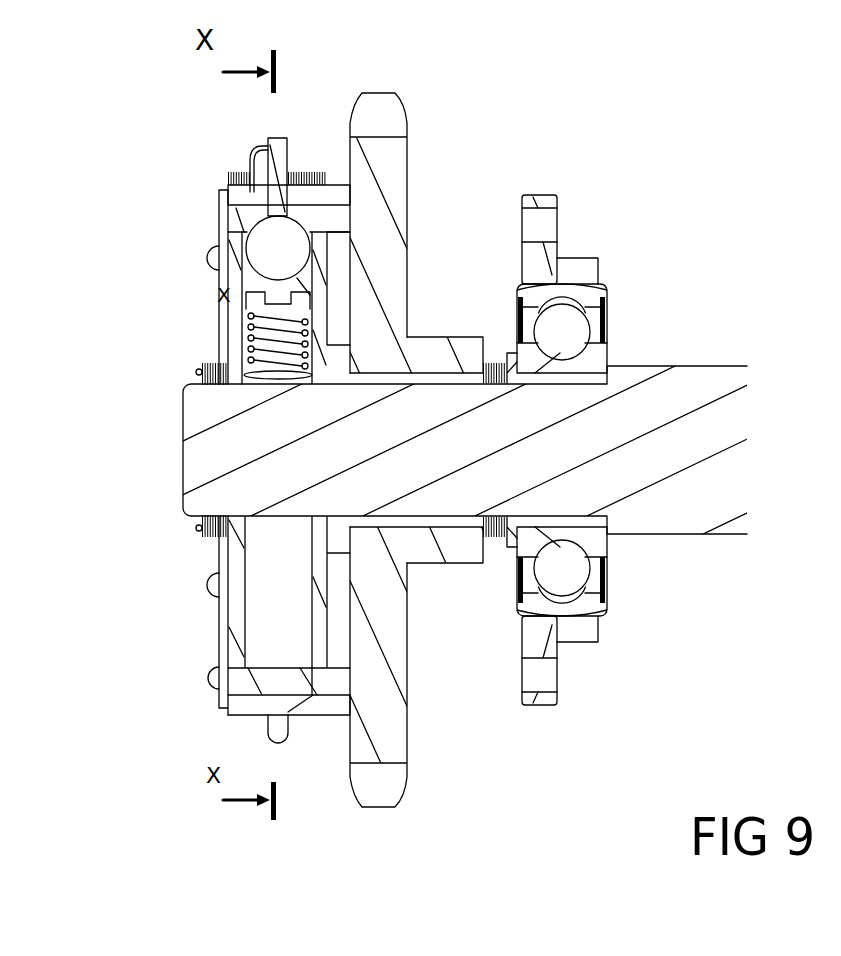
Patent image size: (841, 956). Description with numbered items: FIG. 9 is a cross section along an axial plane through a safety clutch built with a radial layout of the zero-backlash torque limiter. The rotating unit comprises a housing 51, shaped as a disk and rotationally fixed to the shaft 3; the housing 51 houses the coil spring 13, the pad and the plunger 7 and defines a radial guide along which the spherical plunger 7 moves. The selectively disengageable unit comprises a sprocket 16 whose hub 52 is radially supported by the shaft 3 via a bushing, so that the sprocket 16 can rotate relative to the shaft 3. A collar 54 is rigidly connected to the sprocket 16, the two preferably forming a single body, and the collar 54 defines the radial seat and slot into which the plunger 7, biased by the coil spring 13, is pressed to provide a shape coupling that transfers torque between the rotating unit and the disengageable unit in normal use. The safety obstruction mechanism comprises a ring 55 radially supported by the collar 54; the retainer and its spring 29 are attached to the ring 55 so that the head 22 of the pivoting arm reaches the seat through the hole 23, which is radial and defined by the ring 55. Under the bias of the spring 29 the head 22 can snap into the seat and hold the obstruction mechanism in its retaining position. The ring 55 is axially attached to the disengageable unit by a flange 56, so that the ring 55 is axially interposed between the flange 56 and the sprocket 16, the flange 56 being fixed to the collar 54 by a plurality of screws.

The shaft 3 is at (712, 388).
The plunger 7 is at (275, 252).
The coil spring 13 is at (263, 333).
The sprocket 16 is at (384, 110).
The head 22 is at (277, 200).
The hole 23 is at (297, 197).
The spring 29 is at (250, 160).
The housing 51 is at (240, 613).
The hub 52 is at (443, 348).
The collar 54 is at (248, 683).
The ring 55 is at (333, 710).
The flange 56 is at (220, 692).